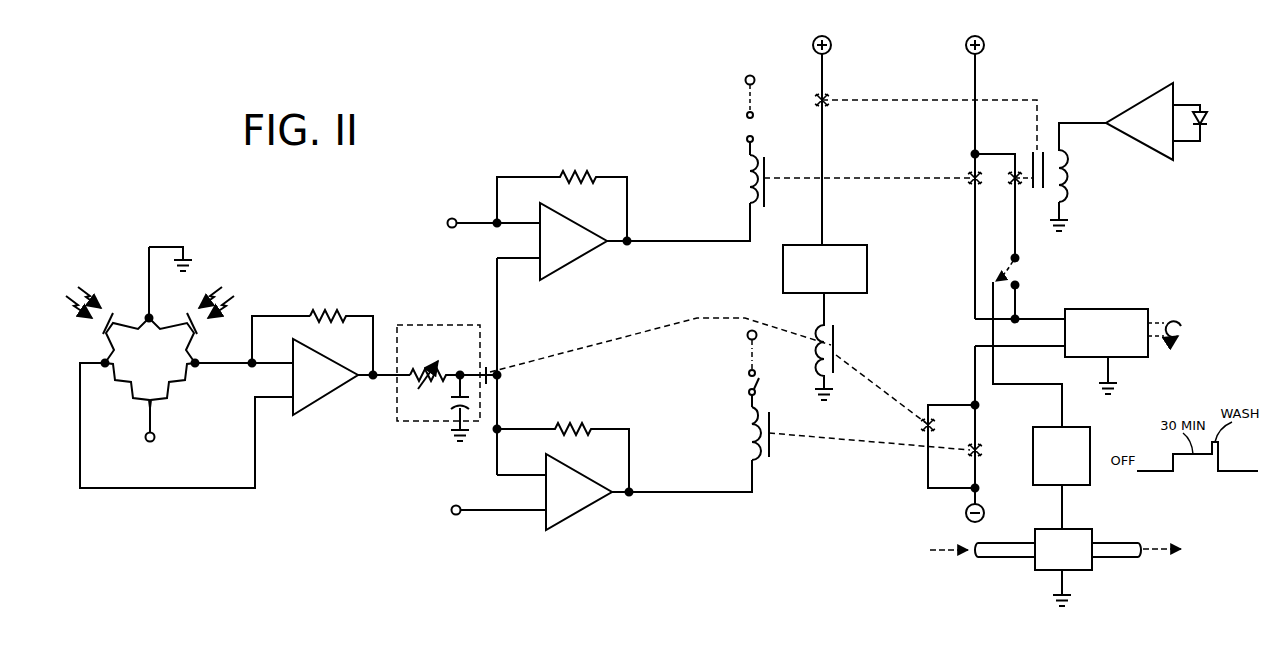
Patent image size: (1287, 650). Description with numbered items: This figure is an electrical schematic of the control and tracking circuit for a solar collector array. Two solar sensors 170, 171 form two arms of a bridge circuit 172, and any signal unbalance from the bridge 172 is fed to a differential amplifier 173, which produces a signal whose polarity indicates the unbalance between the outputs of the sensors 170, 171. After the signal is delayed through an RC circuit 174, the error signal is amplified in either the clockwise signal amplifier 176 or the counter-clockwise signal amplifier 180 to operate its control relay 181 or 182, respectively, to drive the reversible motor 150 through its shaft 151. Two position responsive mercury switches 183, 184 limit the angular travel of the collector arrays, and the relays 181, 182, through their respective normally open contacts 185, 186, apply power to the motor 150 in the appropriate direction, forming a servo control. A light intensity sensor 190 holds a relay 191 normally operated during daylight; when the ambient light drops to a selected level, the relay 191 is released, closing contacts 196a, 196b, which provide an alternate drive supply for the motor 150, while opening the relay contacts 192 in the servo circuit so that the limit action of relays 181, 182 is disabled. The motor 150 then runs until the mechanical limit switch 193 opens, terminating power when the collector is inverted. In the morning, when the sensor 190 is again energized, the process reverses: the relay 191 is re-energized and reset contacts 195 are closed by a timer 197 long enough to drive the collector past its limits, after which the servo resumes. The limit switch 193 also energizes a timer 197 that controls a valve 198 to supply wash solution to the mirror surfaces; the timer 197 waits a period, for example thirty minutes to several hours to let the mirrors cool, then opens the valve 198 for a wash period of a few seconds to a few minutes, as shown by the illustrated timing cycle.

The reversible motor 150 is at (1105, 309).
The shaft 151 is at (1180, 322).
The solar sensor 170 is at (108, 316).
The solar sensor 171 is at (190, 316).
The bridge circuit 172 is at (136, 371).
The differential amplifier 173 is at (320, 403).
The RC circuit 174 is at (445, 422).
The clockwise signal amplifier 176 is at (582, 257).
The counter-clockwise signal amplifier 180 is at (577, 510).
The control relay 181 is at (766, 160).
The control relay 182 is at (770, 460).
The position responsive mercury switch 183 is at (755, 125).
The position responsive mercury switch 184 is at (746, 381).
The normally open contact 185 is at (972, 172).
The normally open contact 186 is at (981, 452).
The light intensity sensor 190 is at (1208, 122).
The relay 191 is at (1066, 176).
The relay contacts 192 is at (491, 370).
The mechanical limit switch 193 is at (1021, 273).
The reset contacts 195 is at (921, 424).
The relay contact 196a is at (1012, 176).
The relay contact 196b is at (826, 98).
The timer 197 is at (867, 263).
The valve 198 is at (1090, 570).